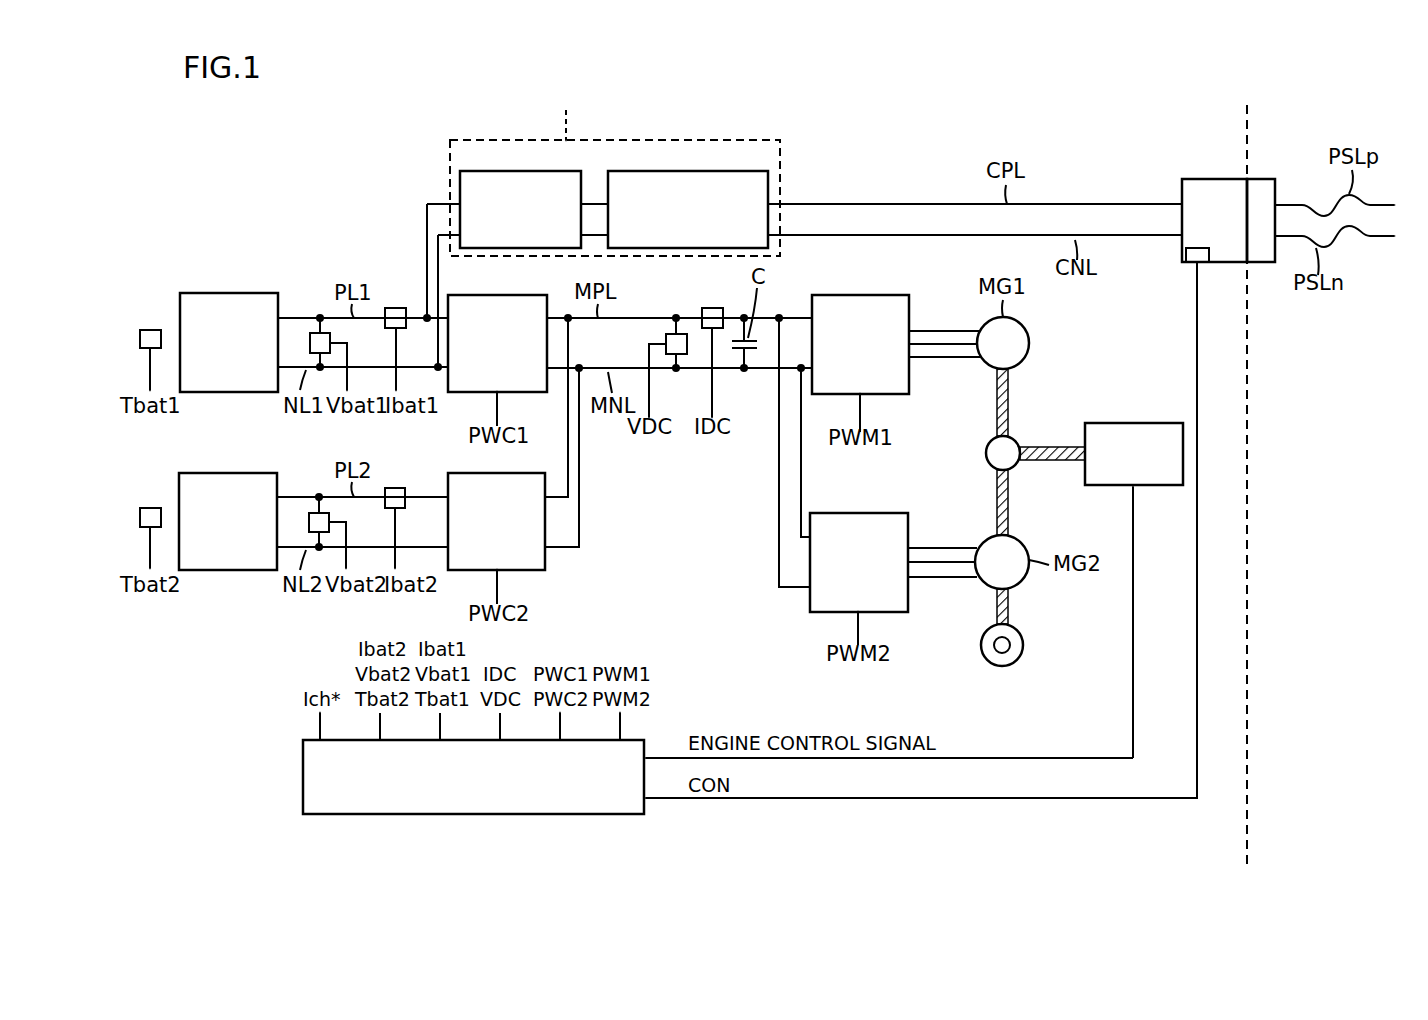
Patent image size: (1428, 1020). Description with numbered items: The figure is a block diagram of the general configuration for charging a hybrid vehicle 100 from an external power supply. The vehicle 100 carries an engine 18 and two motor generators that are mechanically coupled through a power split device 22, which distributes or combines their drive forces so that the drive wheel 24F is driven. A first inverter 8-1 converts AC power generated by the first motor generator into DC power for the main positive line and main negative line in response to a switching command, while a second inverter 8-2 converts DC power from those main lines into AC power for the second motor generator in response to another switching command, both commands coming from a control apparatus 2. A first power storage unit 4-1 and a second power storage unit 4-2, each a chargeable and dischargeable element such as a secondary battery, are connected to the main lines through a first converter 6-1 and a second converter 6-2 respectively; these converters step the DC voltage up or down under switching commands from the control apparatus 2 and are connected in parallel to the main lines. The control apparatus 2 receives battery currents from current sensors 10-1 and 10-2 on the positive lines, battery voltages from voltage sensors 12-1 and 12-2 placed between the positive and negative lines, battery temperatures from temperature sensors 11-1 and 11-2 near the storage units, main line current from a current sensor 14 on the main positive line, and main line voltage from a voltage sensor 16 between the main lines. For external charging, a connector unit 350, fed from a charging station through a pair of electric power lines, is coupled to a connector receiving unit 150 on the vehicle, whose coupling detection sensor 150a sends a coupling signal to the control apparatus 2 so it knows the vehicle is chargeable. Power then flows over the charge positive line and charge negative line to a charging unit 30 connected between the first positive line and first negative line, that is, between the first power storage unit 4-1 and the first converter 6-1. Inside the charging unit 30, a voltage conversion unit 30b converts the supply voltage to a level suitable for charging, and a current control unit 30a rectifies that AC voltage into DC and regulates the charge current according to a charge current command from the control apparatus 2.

The control apparatus 2 is at (607, 815).
The first power storage unit 4-1 is at (218, 293).
The second power storage unit 4-2 is at (217, 473).
The first converter 6-1 is at (505, 295).
The second converter 6-2 is at (505, 473).
The first inverter 8-1 is at (860, 295).
The second inverter 8-2 is at (860, 513).
The current sensor 10-1 is at (396, 308).
The current sensor 10-2 is at (395, 488).
The temperature sensor 11-1 is at (150, 330).
The temperature sensor 11-2 is at (150, 508).
The voltage sensor 12-1 is at (308, 338).
The voltage sensor 12-2 is at (307, 518).
The current sensor 14 is at (712, 308).
The voltage sensor 16 is at (670, 334).
The engine 18 is at (1138, 423).
The power split device 22 is at (1019, 442).
The drive wheel 24F is at (1023, 645).
The charging unit 30 is at (733, 141).
The current control unit 30a is at (505, 171).
The voltage conversion unit 30b is at (718, 171).
The vehicle 100 is at (1070, 139).
The connector receiving unit 150 is at (1216, 179).
The coupling detection sensor 150a is at (1181, 265).
The connector unit 350 is at (1266, 179).